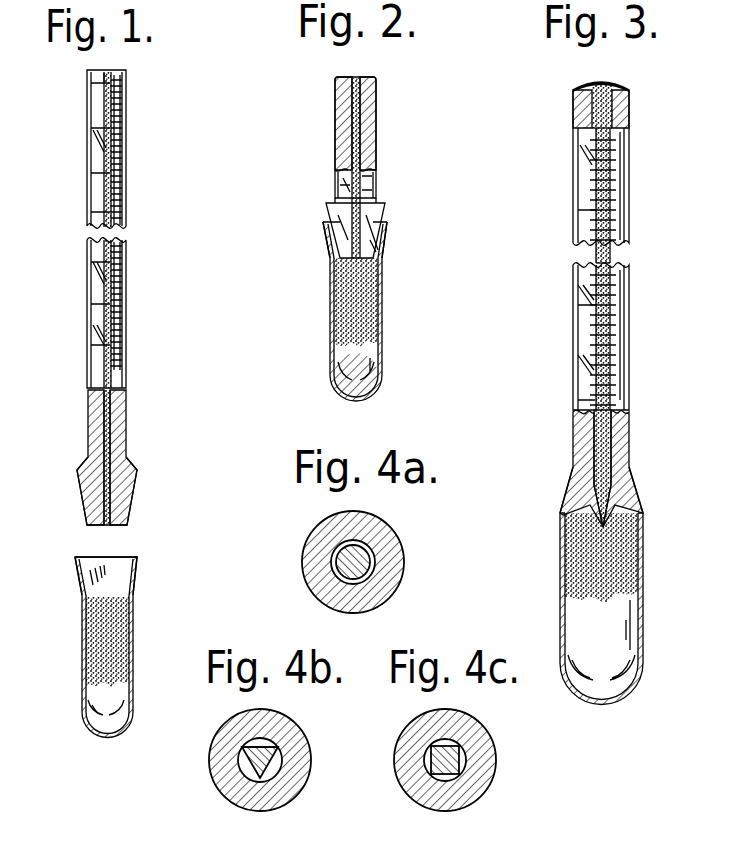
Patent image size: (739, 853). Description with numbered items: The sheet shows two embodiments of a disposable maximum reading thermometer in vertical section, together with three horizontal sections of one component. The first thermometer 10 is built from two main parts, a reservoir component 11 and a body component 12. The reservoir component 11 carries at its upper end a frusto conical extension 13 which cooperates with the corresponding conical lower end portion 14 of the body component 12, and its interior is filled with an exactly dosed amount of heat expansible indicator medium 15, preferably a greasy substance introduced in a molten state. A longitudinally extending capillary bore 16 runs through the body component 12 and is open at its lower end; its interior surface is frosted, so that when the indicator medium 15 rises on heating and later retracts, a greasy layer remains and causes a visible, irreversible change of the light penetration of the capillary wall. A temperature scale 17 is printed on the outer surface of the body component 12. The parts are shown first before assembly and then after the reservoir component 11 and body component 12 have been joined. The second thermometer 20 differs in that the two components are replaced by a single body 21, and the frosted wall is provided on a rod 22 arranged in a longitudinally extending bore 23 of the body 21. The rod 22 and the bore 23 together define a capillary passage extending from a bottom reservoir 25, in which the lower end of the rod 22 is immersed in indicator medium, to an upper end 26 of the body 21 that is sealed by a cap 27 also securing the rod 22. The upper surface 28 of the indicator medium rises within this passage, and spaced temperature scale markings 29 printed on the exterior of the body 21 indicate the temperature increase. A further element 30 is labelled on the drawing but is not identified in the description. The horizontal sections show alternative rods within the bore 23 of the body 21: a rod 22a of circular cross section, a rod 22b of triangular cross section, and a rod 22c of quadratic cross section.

In FIG. 1, the disposable maximum reading thermometer 10 is at (105, 404).
In FIG. 2, the disposable maximum reading thermometer 10 is at (356, 239).
In FIG. 1, the reservoir component 11 is at (114, 647).
In FIG. 2, the reservoir component 11 is at (383, 311).
In FIG. 1, the body component 12 is at (120, 425).
In FIG. 2, the body component 12 is at (362, 152).
In FIG. 1, the frusto conical extension 13 is at (137, 581).
In FIG. 2, the frusto conical extension 13 is at (385, 246).
In FIG. 1, the conical lower end portion 14 is at (130, 506).
In FIG. 2, the conical lower end portion 14 is at (386, 224).
In FIG. 1, the heat expansible indicator medium 15 is at (84, 632).
In FIG. 2, the heat expansible indicator medium 15 is at (385, 318).
In FIG. 1, the capillary bore 16 is at (112, 456).
In FIG. 2, the capillary bore 16 is at (375, 113).
In FIG. 1, the temperature scale 17 is at (122, 143).
In FIG. 3, the disposable maximum reading thermometer 20 is at (604, 381).
In FIG. 3, the single body 21 is at (628, 608).
In FIG. 4A, the single body 21 is at (385, 589).
In FIG. 4B, the single body 21 is at (292, 789).
In FIG. 4C, the single body 21 is at (478, 789).
In FIG. 3, the rod 22 is at (608, 452).
In FIG. 4A, the rod with circular cross section 22a is at (360, 571).
In FIG. 4B, the rod with triangular cross section 22b is at (270, 771).
In FIG. 4C, the rod with quadratic cross section 22c is at (460, 771).
In FIG. 3, the longitudinally extending bore 23 is at (628, 469).
In FIG. 4A, the longitudinally extending bore 23 is at (385, 537).
In FIG. 4B, the longitudinally extending bore 23 is at (292, 733).
In FIG. 4C, the longitudinally extending bore 23 is at (475, 733).
In FIG. 3, the bottom reservoir 25 is at (641, 543).
In FIG. 3, the upper end 26 is at (632, 93).
In FIG. 3, the cap 27 is at (622, 85).
In FIG. 3, the upper surface of indicator medium 28 is at (598, 471).
In FIG. 3, the temperature scale markings 29 is at (625, 378).
In FIG. 3, the tube 30 is at (628, 213).